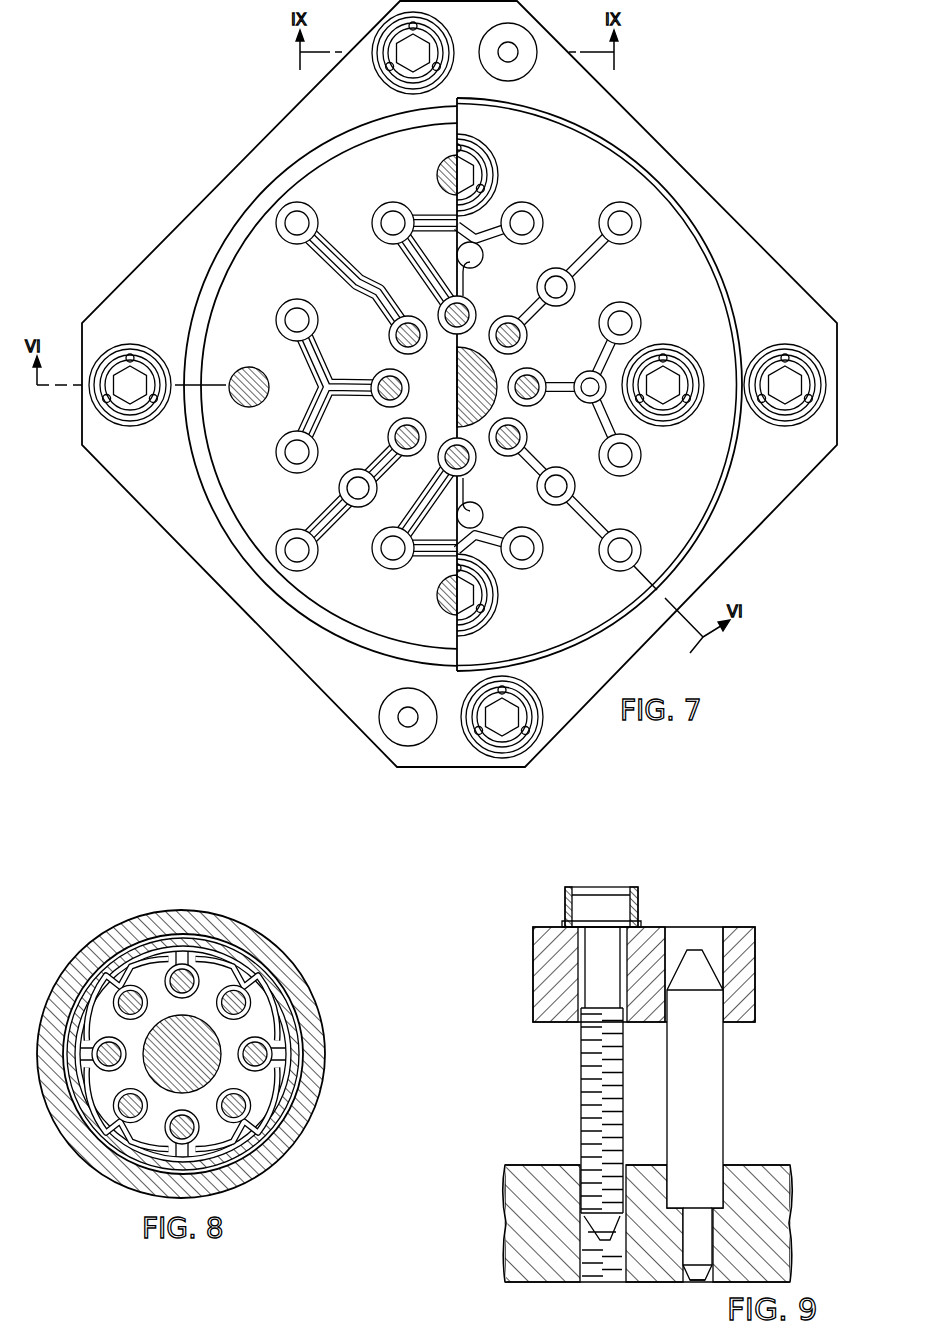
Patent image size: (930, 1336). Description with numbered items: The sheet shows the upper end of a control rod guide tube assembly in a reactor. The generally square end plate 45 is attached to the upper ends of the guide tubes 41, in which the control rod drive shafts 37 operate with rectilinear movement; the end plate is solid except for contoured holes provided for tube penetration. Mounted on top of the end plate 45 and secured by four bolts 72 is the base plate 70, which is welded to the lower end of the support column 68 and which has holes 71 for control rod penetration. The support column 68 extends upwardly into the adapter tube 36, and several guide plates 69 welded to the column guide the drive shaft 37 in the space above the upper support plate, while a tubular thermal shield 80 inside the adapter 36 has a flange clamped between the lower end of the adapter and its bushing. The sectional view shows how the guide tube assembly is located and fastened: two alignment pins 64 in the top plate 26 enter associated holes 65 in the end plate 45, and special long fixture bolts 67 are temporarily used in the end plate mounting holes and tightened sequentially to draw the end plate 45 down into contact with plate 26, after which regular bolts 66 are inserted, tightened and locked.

In FIG. 9, the top plate 26 is at (772, 1172).
In FIG. 8, the adapter tube 36 is at (314, 1038).
In FIG. 7, the control rod drive shaft 37 is at (300, 312).
In FIG. 8, the control rod drive shaft 37 is at (194, 977).
In FIG. 7, the guide tube 41 is at (374, 556).
In FIG. 9, the end plate 45 is at (540, 963).
In FIG. 7, the alignment pin 64 is at (530, 58).
In FIG. 9, the alignment pin 64 is at (718, 1073).
In FIG. 7, the hole 65 is at (493, 67).
In FIG. 9, the hole 65 is at (703, 930).
In FIG. 7, the regular bolt 66 is at (440, 42).
In FIG. 9, the fixture bolt 67 is at (585, 1060).
In FIG. 7, the support column 68 is at (455, 386).
In FIG. 8, the support column 68 is at (221, 1058).
In FIG. 8, the guide plate 69 is at (98, 1083).
In FIG. 7, the base plate 70 is at (708, 482).
In FIG. 7, the hole 71 is at (307, 229).
In FIG. 7, the bolt 72 is at (477, 149).
In FIG. 8, the tubular thermal shield 80 is at (285, 1006).